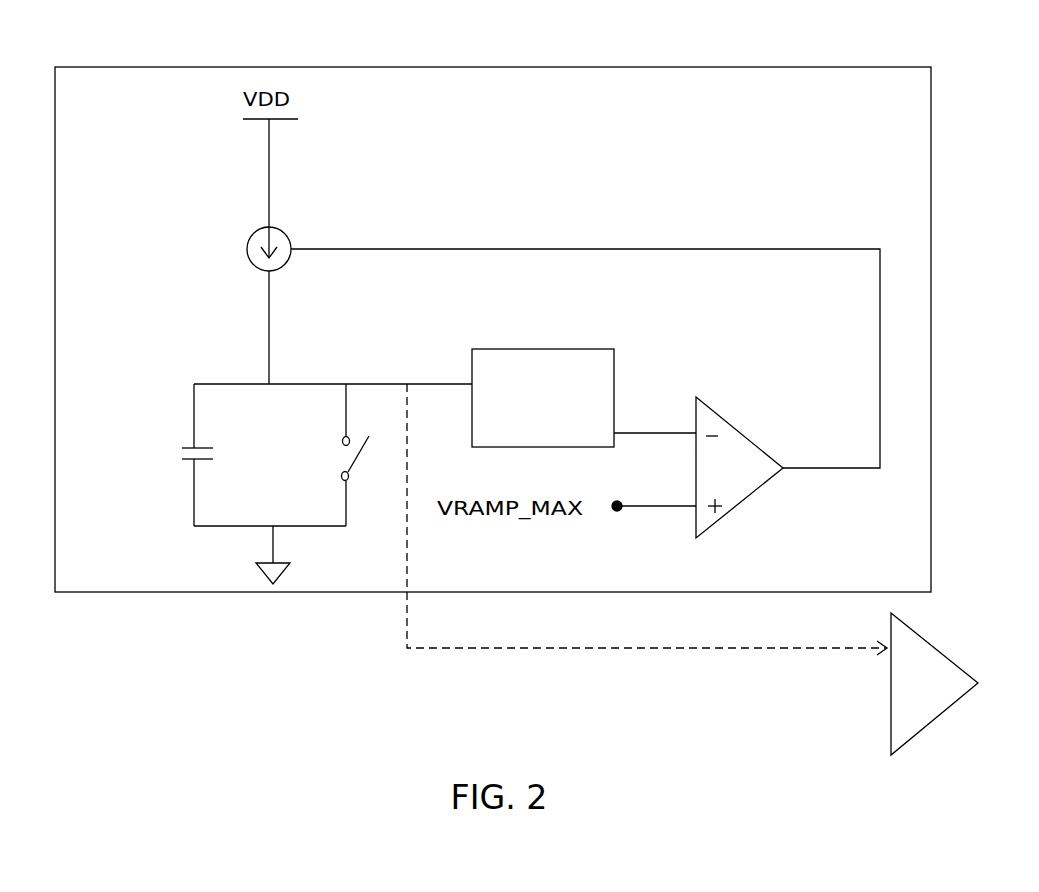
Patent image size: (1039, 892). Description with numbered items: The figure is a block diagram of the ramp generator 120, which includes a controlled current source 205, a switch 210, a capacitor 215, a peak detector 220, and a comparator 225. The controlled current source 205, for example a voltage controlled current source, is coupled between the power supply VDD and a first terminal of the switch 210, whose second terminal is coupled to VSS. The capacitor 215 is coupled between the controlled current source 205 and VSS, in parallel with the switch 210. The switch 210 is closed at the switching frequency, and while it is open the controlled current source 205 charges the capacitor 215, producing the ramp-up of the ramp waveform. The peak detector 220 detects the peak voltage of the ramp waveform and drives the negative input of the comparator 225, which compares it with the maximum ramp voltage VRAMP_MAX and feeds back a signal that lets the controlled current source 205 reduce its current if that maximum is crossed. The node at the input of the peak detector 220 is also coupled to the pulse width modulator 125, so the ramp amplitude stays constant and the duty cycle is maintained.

The ramp generator 120 is at (188, 66).
The controlled current source 205 is at (252, 238).
The switch 210 is at (345, 471).
The capacitor 215 is at (183, 447).
The peak detector 220 is at (556, 349).
The comparator 225 is at (696, 412).
The pulse width modulator 125 is at (960, 666).